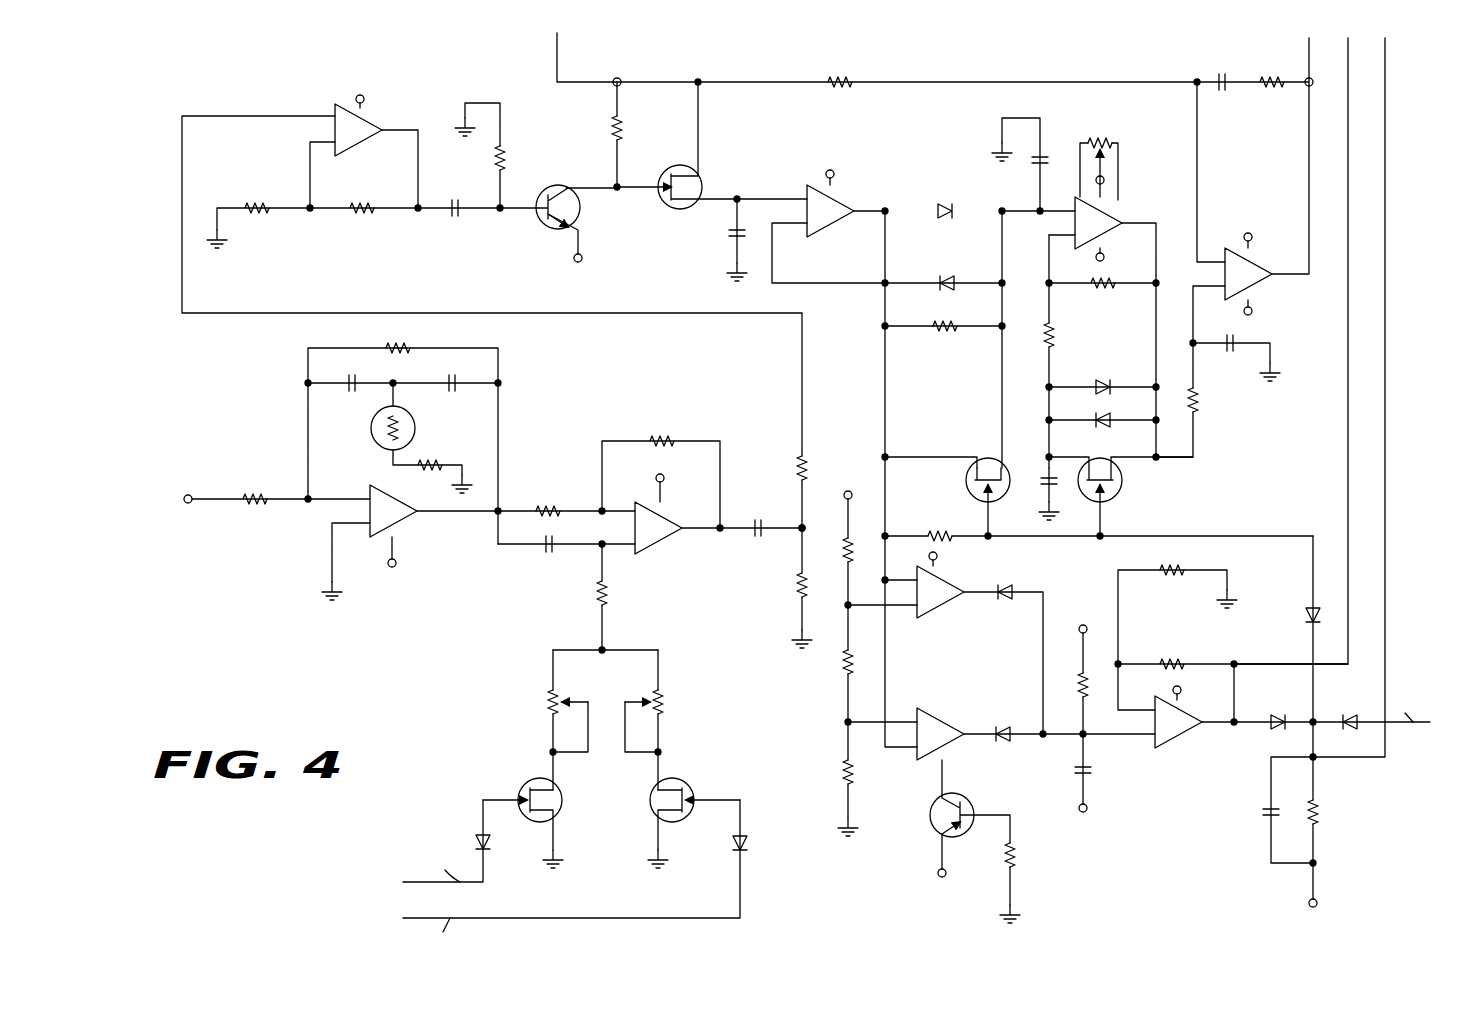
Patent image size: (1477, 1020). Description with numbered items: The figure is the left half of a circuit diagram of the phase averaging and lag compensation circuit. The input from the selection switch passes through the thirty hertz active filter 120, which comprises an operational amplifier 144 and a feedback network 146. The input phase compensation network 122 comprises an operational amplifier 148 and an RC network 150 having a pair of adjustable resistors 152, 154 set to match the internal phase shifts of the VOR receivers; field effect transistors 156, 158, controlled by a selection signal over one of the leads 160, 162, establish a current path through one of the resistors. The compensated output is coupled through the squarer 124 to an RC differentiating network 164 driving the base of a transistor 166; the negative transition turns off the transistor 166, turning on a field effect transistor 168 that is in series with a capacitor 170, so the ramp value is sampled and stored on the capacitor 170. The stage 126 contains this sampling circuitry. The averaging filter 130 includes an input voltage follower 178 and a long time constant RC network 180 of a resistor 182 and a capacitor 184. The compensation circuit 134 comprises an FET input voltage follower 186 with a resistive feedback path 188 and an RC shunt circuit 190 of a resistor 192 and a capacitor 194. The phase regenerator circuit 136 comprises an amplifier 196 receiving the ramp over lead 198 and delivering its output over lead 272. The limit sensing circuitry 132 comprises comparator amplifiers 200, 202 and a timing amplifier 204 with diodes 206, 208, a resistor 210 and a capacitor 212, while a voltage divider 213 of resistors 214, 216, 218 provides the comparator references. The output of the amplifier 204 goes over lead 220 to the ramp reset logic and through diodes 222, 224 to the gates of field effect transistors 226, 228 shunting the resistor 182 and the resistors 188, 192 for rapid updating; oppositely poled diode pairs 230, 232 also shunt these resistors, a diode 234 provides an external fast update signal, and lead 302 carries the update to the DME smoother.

The 30 Hz active filter 120 is at (308, 471).
The input phase compensation network 122 is at (575, 689).
The squarer 124 is at (330, 254).
The transistor switch stage 126 is at (692, 182).
The averaging filter 130 is at (1094, 456).
The limit sensing circuitry 132 is at (1120, 707).
The compensation circuit 134 is at (1075, 270).
The phase regenerator circuit 136 is at (1237, 247).
The operational amplifier 144 is at (412, 524).
The feedback network 146 is at (296, 424).
The operational amplifier 148 is at (672, 543).
The RC network 150 is at (608, 724).
The adjustable resistor 152 is at (544, 703).
The adjustable resistor 154 is at (662, 701).
The field effect transistor 156 is at (527, 780).
The field effect transistor 158 is at (692, 782).
The lead 160 is at (412, 884).
The lead 162 is at (481, 918).
The RC differentiating network 164 is at (585, 172).
The transistor 166 is at (544, 226).
The field effect transistor 168 is at (700, 191).
The capacitor 170 is at (730, 238).
The input voltage follower 178 is at (828, 226).
The RC network 180 is at (1022, 192).
The resistor 182 is at (937, 334).
The capacitor 184 is at (1048, 150).
The FET input voltage follower 186 is at (1076, 243).
The resistive feedback path 188 is at (1086, 289).
The RC shunt circuit 190 is at (1042, 377).
The resistor 192 is at (1056, 344).
The capacitor 194 is at (1040, 491).
The amplifier 196 is at (1269, 281).
The lead 198 is at (941, 82).
The comparator amplifier 200 is at (939, 577).
The comparator amplifier 202 is at (940, 714).
The amplifier 204 is at (1178, 735).
The diode 206 is at (1006, 587).
The diode 208 is at (1003, 745).
The resistor 210 is at (1088, 698).
The capacitor 212 is at (1092, 773).
The voltage divider 213 is at (849, 663).
The resistor 214 is at (845, 542).
The resistor 216 is at (842, 669).
The resistor 218 is at (854, 778).
The lead 220 is at (1350, 122).
The diode 222 is at (1278, 731).
The diode 224 is at (1305, 608).
The field effect transistor 226 is at (970, 487).
The field effect transistor 228 is at (1124, 491).
The pair of oppositely poled diodes 230 is at (929, 225).
The pair of oppositely poled diodes 232 is at (1117, 395).
The diode 234 is at (1346, 729).
The lead 272 is at (1309, 46).
The lead 302 is at (1385, 78).